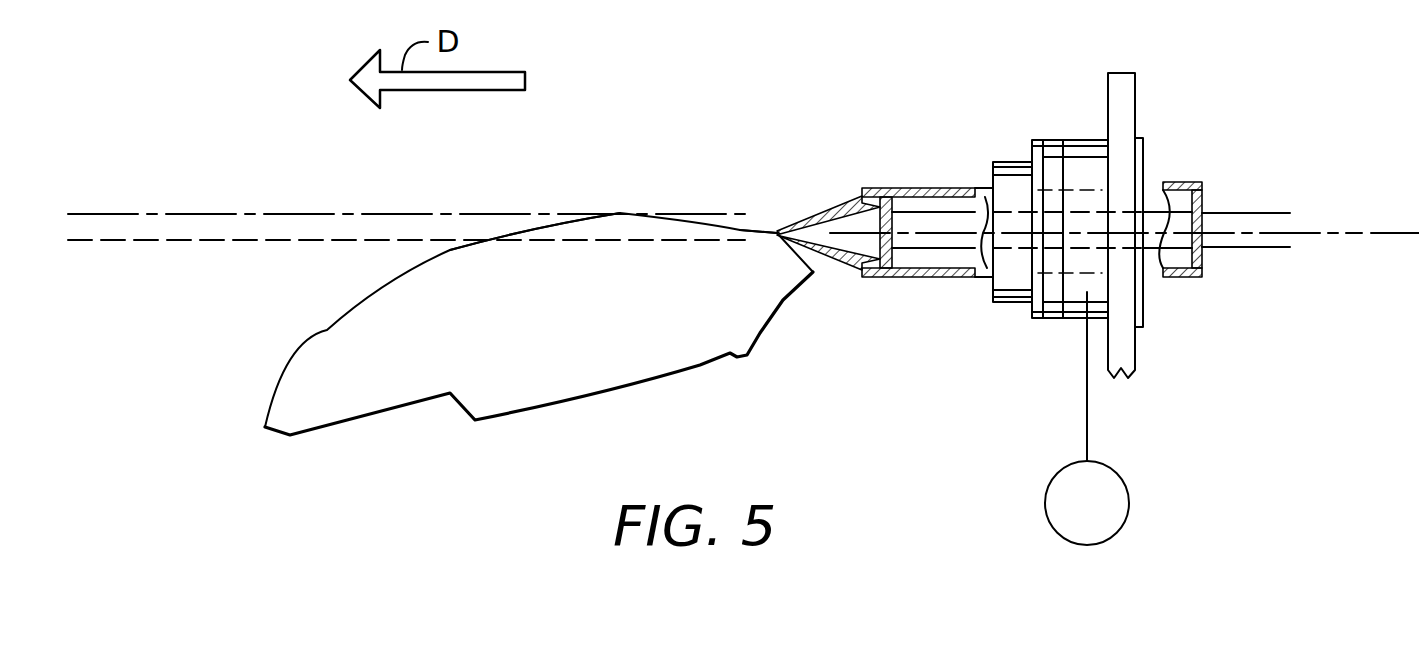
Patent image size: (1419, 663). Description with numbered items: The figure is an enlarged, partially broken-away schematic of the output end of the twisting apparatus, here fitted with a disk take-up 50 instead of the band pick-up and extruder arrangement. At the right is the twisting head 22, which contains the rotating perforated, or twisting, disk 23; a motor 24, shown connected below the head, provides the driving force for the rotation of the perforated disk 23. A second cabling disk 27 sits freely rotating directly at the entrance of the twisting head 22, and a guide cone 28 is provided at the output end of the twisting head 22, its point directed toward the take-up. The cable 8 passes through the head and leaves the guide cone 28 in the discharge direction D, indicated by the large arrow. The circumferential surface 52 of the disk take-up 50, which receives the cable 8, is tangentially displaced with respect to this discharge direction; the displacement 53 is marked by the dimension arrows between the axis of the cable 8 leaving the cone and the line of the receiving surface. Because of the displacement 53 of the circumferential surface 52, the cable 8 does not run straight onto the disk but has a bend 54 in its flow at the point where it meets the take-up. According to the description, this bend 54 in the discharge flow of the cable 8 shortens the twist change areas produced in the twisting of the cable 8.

The cable 8 is at (96, 214).
The tangential displacement 53 is at (224, 300).
The disk take-up 50 is at (345, 340).
The circumferential surface 52 is at (533, 227).
The bend 54 is at (747, 230).
The guide cone 28 is at (823, 258).
The rotating perforated disk 23 is at (902, 276).
The twisting head 22 is at (1080, 140).
The second cabling disk 27 is at (1203, 253).
The motor 24 is at (1129, 500).